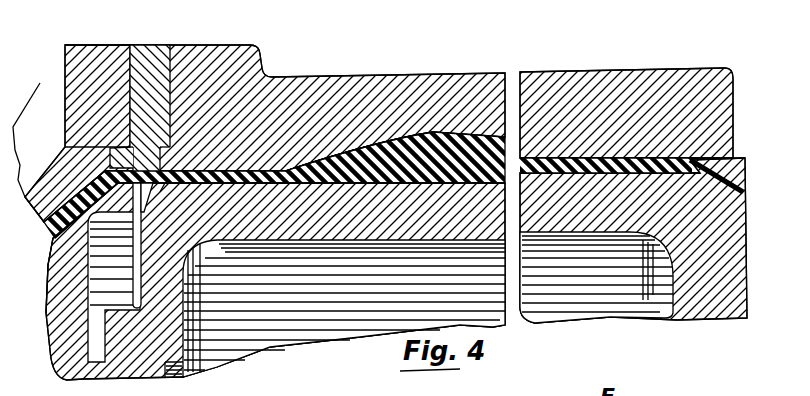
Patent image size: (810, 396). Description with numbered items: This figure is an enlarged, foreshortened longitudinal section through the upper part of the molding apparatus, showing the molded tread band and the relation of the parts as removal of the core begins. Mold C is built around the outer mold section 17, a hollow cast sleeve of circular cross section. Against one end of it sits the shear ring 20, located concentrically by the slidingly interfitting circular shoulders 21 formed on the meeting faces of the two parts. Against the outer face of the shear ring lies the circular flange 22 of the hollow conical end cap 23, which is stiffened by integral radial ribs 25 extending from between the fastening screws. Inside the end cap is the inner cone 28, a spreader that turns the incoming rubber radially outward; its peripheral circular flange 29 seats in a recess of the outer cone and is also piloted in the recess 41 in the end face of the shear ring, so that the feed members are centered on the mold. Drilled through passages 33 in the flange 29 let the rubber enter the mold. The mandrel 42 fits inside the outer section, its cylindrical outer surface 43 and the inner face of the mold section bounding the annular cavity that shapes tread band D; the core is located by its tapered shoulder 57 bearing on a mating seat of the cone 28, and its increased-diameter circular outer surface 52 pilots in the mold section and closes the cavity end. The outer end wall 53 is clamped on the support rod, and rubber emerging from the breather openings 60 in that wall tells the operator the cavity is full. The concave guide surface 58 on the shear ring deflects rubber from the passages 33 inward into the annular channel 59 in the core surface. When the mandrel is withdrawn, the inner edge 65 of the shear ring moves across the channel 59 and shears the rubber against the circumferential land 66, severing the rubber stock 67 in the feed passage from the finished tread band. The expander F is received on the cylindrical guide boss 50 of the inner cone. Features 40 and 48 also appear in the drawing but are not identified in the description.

The outer mold section 17 is at (318, 82).
The shear ring 20 is at (152, 48).
The interfitting circular shoulders 21 is at (187, 148).
The circular flange 22 is at (97, 50).
The conical end cap 23 is at (43, 198).
The radial ribs 25 is at (40, 92).
The inner cone 28 is at (46, 316).
The circular flange 29 is at (124, 145).
The through passages 33 is at (110, 172).
The flange 40 is at (110, 150).
The recess 41 is at (137, 150).
The mandrel 42 is at (293, 240).
The cylindrical outer surface 43 is at (378, 177).
The cavity wall 48 is at (197, 312).
The cylindrical guide boss 50 is at (128, 362).
The circular outer surface 52 is at (712, 157).
The outer end wall 53 is at (743, 278).
The tapered shoulder 57 is at (114, 286).
The concave guide surface 58 is at (166, 176).
The annular channel 59 is at (183, 190).
The breather openings 60 is at (748, 172).
The inner edge 65 is at (150, 196).
The circumferential land 66 is at (167, 194).
The rubber stock 67 is at (47, 232).